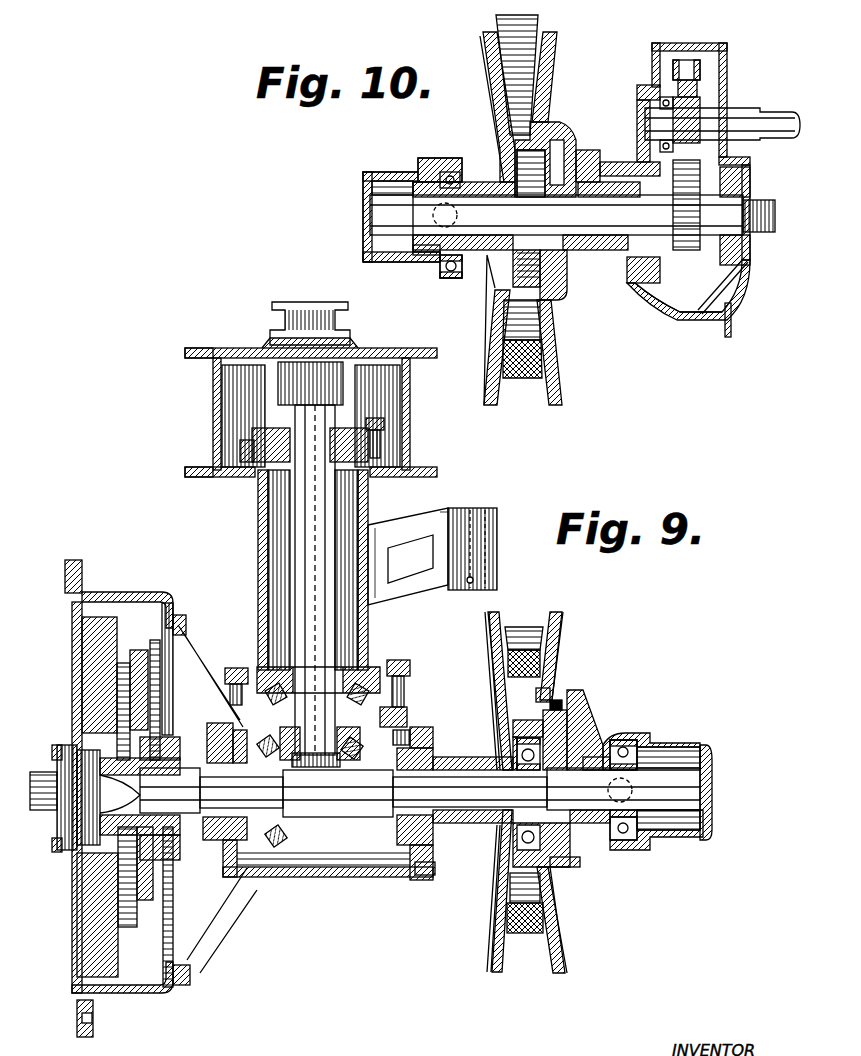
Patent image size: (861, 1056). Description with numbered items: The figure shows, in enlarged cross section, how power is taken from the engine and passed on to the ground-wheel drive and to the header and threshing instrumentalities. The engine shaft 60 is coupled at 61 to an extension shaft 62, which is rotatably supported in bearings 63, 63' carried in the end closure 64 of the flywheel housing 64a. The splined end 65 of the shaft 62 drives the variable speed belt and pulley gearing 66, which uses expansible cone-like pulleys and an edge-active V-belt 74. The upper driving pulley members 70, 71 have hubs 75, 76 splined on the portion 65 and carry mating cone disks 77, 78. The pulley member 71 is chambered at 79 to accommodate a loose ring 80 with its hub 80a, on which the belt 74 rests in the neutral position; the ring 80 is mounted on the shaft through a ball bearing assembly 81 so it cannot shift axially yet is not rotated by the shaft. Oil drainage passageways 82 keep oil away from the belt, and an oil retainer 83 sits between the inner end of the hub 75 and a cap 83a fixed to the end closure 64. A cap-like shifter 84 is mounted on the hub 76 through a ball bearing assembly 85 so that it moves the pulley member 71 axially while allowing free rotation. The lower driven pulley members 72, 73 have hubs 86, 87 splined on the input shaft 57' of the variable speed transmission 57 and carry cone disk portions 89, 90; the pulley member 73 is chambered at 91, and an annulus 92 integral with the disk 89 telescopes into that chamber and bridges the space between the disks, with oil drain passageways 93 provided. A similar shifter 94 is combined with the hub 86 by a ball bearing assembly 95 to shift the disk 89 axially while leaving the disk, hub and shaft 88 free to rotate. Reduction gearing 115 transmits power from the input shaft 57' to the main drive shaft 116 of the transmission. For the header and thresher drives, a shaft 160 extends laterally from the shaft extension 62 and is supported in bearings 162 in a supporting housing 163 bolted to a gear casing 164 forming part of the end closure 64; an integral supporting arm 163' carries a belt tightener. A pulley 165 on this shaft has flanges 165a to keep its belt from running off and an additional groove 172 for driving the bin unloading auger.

In FIG. 10, the variable speed transmission 57 is at (700, 179).
In FIG. 10, the input shaft 57' is at (671, 307).
In FIG. 9, the engine shaft 60 is at (55, 834).
In FIG. 9, the coupling 61 is at (255, 745).
In FIG. 9, the extension shaft 62 is at (342, 800).
In FIG. 9, the bearings 63 is at (245, 904).
In FIG. 9, the bearing 63' is at (318, 831).
In FIG. 9, the end closure 64 is at (205, 675).
In FIG. 9, the flywheel housing 64a is at (125, 594).
In FIG. 9, the splined end 65 is at (672, 782).
In FIG. 9, the variable speed belt and pulley gearing 66 is at (482, 660).
In FIG. 9, the driving pulley member 70 is at (500, 612).
In FIG. 9, the driving pulley member 71 is at (558, 622).
In FIG. 10, the driven pulley member 72 is at (483, 340).
In FIG. 10, the driven pulley member 73 is at (558, 375).
In FIG. 10, the V-belt 74 is at (522, 378).
In FIG. 9, the V-belt 74 is at (525, 648).
In FIG. 9, the hub 75 is at (462, 826).
In FIG. 9, the hub 76 is at (610, 760).
In FIG. 9, the cone disk 77 is at (505, 616).
In FIG. 9, the cone disk 78 is at (545, 652).
In FIG. 9, the chamber 79 is at (590, 758).
In FIG. 9, the loose ring 80 is at (540, 715).
In FIG. 9, the hub portion 80a is at (528, 728).
In FIG. 9, the ball bearing assembly 81 is at (515, 750).
In FIG. 9, the oil drainage passageways 82 is at (580, 705).
In FIG. 9, the oil retainer 83 is at (432, 738).
In FIG. 9, the cap 83a is at (430, 876).
In FIG. 9, the shifter 84 is at (714, 758).
In FIG. 9, the ball bearing assembly 85 is at (628, 748).
In FIG. 10, the hub 86 is at (470, 182).
In FIG. 10, the hub 87 is at (584, 180).
In FIG. 10, the shaft 88 is at (572, 215).
In FIG. 10, the cone disk portion 89 is at (488, 62).
In FIG. 10, the cone disk portion 90 is at (553, 62).
In FIG. 10, the chamber 91 is at (566, 282).
In FIG. 10, the annulus 92 is at (566, 138).
In FIG. 10, the oil drain passageways 93 is at (510, 278).
In FIG. 10, the shifter 94 is at (412, 172).
In FIG. 10, the ball bearing assembly 95 is at (438, 276).
In FIG. 10, the reduction gearing 115 is at (686, 60).
In FIG. 10, the main drive shaft 116 is at (750, 110).
In FIG. 9, the shaft 160 is at (300, 574).
In FIG. 9, the bearings 162 is at (386, 438).
In FIG. 9, the supporting housing 163 is at (292, 581).
In FIG. 9, the supporting arm 163' is at (458, 547).
In FIG. 9, the gear casing 164 is at (415, 710).
In FIG. 9, the pulley 165 is at (213, 415).
In FIG. 9, the flanges 165a is at (186, 352).
In FIG. 9, the groove 172 is at (278, 324).